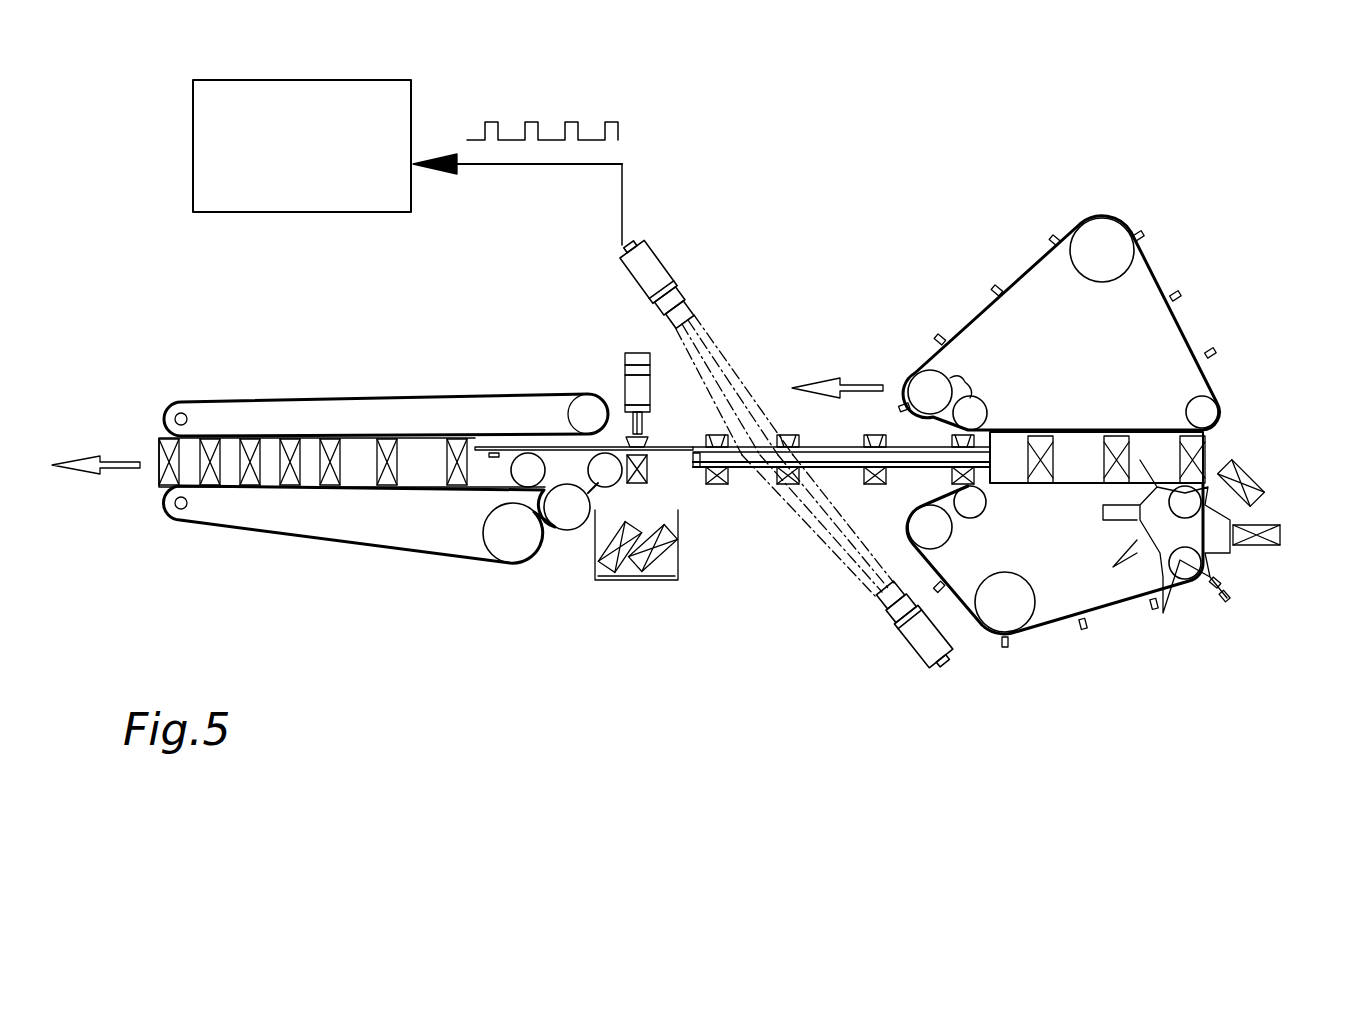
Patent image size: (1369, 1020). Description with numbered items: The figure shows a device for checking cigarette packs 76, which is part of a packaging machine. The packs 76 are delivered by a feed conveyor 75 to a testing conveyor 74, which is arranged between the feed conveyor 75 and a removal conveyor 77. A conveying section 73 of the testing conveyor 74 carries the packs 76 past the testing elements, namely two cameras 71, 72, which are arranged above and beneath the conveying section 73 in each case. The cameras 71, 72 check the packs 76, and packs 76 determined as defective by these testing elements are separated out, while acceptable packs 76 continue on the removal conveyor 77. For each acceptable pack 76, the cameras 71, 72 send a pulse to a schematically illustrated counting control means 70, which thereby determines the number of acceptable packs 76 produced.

The counting control means 70 is at (285, 165).
The camera 71 is at (663, 258).
The camera 72 is at (920, 665).
The conveying section 73 is at (805, 366).
The testing conveyor 74 is at (752, 463).
The feed conveyor 75 is at (1233, 340).
The cigarette packs 76 is at (445, 462).
The removal conveyor 77 is at (440, 380).